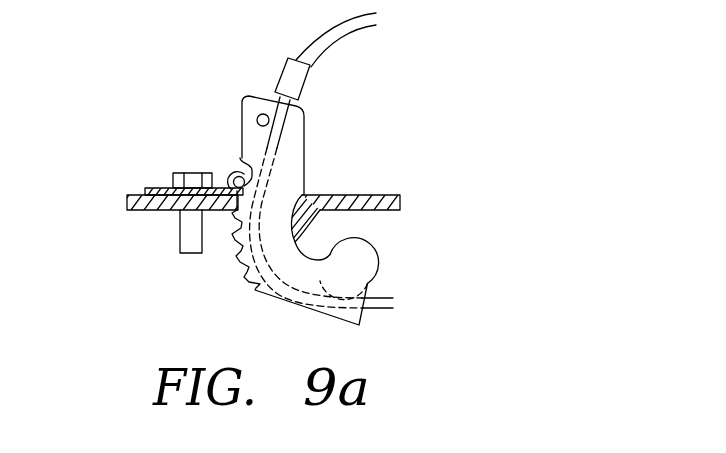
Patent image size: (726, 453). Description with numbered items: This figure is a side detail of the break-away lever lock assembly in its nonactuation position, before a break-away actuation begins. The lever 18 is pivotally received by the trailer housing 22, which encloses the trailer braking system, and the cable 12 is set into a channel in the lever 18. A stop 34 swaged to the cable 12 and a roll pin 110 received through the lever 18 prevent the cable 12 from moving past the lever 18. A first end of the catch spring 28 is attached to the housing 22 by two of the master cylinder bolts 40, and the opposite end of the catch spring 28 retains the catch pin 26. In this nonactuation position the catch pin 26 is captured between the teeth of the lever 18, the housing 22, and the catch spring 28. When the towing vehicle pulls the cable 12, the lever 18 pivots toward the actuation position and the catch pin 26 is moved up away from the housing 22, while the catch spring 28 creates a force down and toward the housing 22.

The cable 12 is at (317, 40).
The lever 18 is at (287, 149).
The trailer housing 22 is at (320, 197).
The catch pin 26 is at (240, 165).
The catch spring 28 is at (170, 187).
The stop 34 is at (295, 90).
The master cylinder bolts 40 is at (215, 174).
The roll pin 110 is at (264, 114).